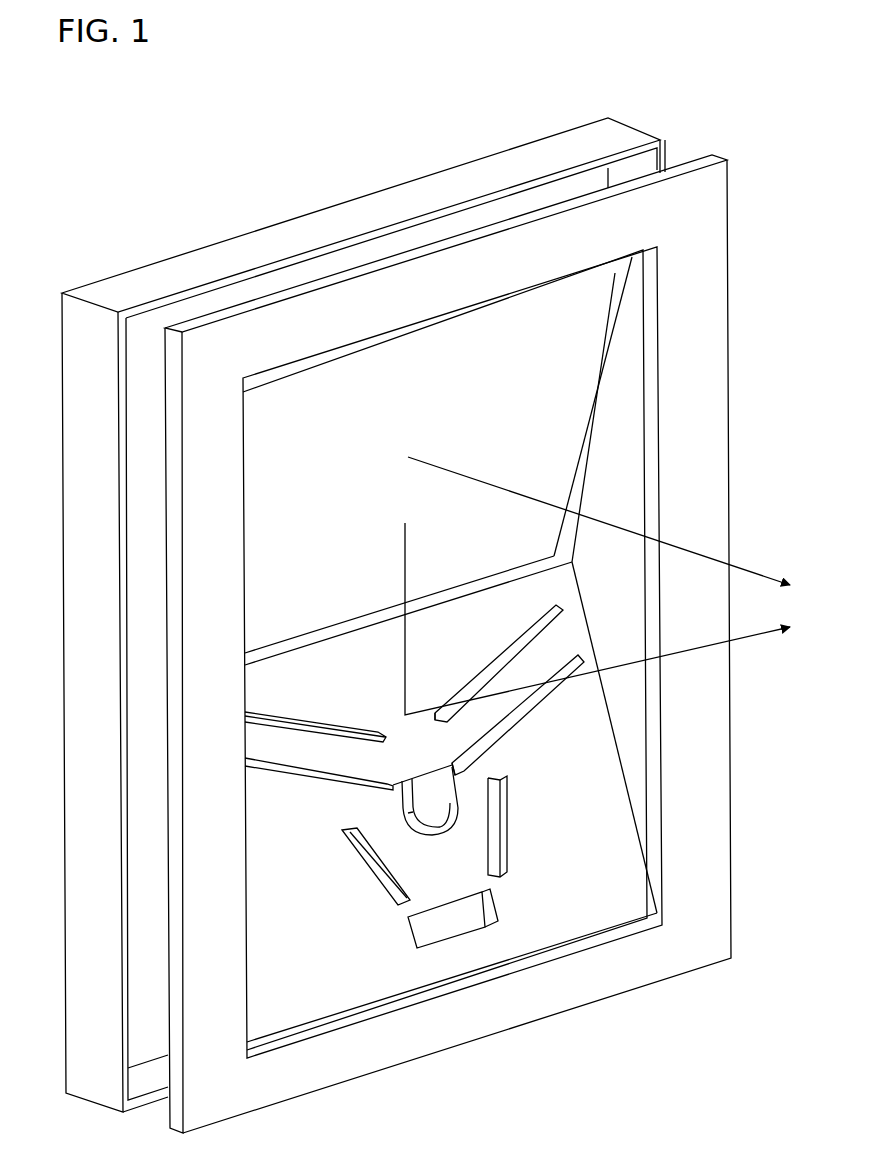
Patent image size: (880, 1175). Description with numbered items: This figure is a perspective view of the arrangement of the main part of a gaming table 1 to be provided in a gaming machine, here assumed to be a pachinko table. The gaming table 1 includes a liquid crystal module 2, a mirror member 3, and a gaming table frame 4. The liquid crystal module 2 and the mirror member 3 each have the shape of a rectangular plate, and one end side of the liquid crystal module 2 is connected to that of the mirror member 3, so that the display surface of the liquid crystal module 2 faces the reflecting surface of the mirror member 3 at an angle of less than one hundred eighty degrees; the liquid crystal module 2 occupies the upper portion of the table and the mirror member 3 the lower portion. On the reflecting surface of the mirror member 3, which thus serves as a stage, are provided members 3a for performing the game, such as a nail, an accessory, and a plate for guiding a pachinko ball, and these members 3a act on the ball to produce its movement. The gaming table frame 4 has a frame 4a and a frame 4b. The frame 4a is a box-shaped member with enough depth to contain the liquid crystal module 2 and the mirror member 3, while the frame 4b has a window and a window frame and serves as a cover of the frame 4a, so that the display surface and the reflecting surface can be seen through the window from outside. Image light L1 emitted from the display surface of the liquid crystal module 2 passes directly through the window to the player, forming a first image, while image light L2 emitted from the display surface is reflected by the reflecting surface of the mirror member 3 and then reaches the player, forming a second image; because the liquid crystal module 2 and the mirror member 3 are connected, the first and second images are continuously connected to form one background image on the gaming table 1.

The gaming table 1 is at (243, 149).
The liquid crystal module 2 is at (537, 408).
The mirror member 3 is at (600, 820).
The members for performing a game 3a is at (303, 770).
The gaming table frame 4 is at (715, 86).
The frame 4a is at (637, 138).
The frame 4b is at (696, 183).
The image light L1 is at (599, 521).
The image light L2 is at (597, 619).